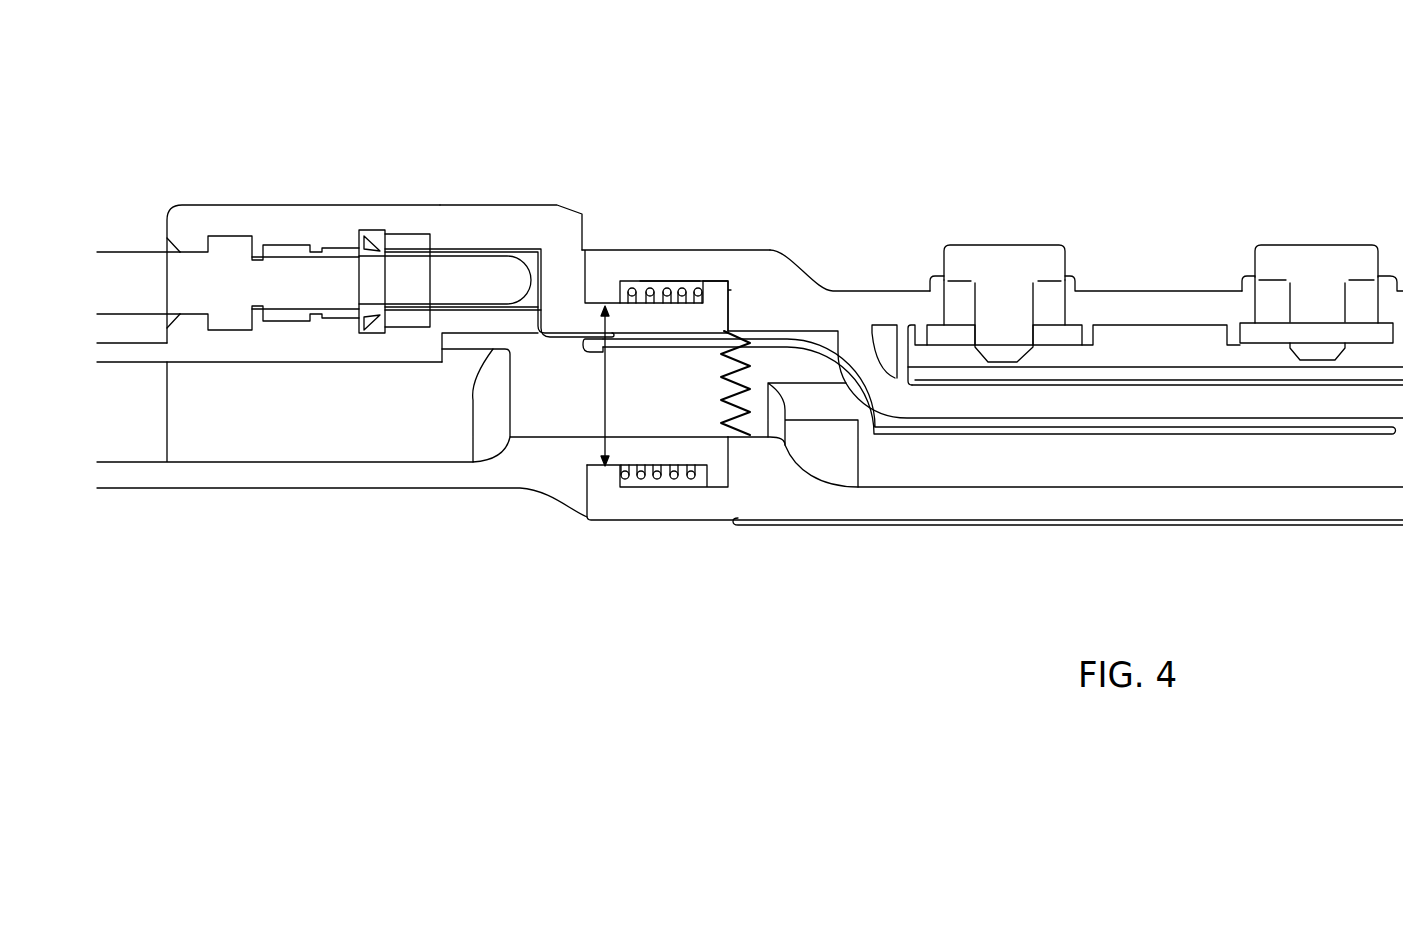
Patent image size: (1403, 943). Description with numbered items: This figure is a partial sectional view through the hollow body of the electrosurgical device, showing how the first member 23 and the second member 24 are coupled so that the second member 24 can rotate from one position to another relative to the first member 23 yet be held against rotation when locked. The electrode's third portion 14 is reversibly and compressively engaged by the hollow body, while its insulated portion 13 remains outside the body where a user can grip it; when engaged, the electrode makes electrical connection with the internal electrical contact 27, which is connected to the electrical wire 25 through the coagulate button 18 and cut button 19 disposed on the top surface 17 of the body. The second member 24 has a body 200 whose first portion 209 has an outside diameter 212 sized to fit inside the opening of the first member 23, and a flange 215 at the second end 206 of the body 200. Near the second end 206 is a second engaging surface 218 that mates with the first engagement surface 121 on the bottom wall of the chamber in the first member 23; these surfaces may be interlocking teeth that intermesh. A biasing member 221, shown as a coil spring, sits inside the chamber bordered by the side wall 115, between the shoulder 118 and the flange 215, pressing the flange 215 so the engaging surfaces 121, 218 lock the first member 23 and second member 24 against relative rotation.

The insulated portion 13 is at (118, 258).
The third portion 14 is at (330, 282).
The second member 24 is at (443, 218).
The body 200 is at (469, 218).
The internal electrical contact 27 is at (557, 218).
The first portion 209 is at (633, 318).
The shoulder 118 is at (630, 280).
The biasing member 221 is at (673, 280).
The flange 215 is at (717, 290).
The second end 206 is at (728, 290).
The first engagement surface 121 is at (765, 370).
The first member 23 is at (850, 302).
The second engaging surface 218 is at (727, 388).
The outside diameter 212 is at (607, 410).
The side wall 115 is at (647, 478).
The electrical wire 25 is at (905, 432).
The top surface 17 is at (1153, 295).
The coagulate button 18 is at (996, 262).
The cut button 19 is at (1298, 259).